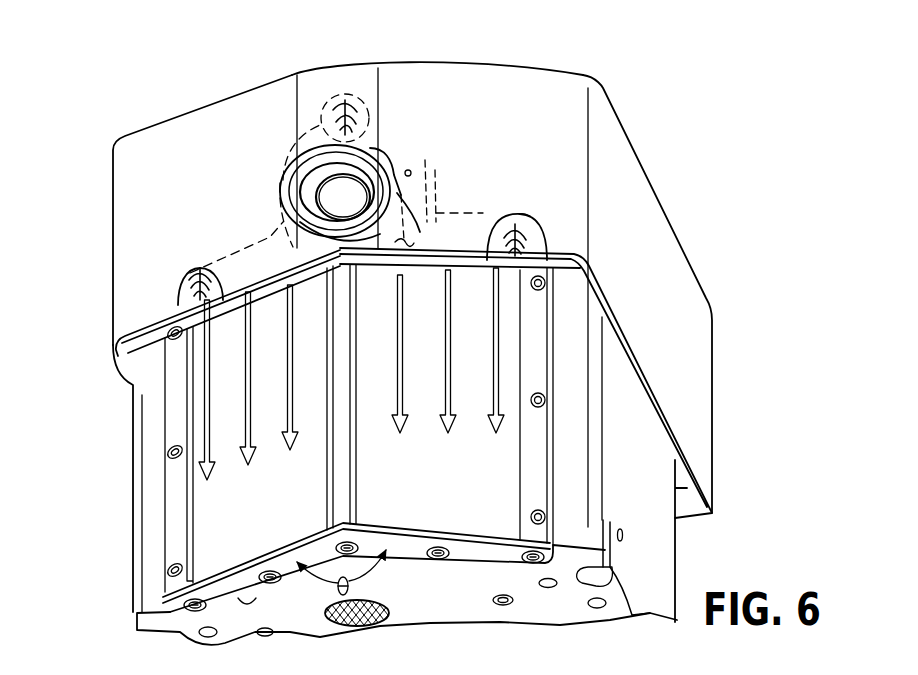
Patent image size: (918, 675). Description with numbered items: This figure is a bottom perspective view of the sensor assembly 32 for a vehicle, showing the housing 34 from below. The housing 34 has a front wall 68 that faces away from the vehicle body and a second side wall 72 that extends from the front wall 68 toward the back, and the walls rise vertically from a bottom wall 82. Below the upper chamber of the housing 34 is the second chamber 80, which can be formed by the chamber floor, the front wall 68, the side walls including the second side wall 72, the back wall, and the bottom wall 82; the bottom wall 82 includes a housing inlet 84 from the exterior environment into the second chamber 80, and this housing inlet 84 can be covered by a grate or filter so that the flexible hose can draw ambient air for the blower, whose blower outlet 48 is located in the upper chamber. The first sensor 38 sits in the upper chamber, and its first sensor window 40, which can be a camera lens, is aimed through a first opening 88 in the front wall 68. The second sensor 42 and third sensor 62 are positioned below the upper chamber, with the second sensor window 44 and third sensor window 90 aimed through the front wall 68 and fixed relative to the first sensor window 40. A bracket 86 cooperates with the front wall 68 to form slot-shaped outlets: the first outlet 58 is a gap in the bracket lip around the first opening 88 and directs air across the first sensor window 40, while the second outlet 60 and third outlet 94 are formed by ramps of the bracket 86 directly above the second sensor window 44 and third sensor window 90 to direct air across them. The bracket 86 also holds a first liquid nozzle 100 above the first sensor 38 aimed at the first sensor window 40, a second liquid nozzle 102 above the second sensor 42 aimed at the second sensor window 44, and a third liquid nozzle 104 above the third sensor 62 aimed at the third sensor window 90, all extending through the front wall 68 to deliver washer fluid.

The sensor assembly 32 is at (795, 326).
The housing 34 is at (716, 408).
The first sensor 38 is at (370, 149).
The first sensor window 40 is at (343, 197).
The second sensor 42 is at (223, 577).
The second sensor window 44 is at (233, 520).
The blower outlet 48 is at (137, 153).
The first outlet 58 is at (317, 163).
The second outlet 60 is at (242, 286).
The third sensor 62 is at (485, 497).
The front wall 68 is at (237, 120).
The second side wall 72 is at (665, 288).
The second chamber 80 is at (650, 547).
The bottom wall 82 is at (562, 602).
The housing inlet 84 is at (360, 617).
The bracket 86 is at (482, 213).
The first opening 88 is at (287, 193).
The third sensor window 90 is at (440, 497).
The third outlet 94 is at (490, 221).
The first liquid nozzle 100 is at (337, 93).
The second liquid nozzle 102 is at (185, 268).
The third liquid nozzle 104 is at (545, 233).